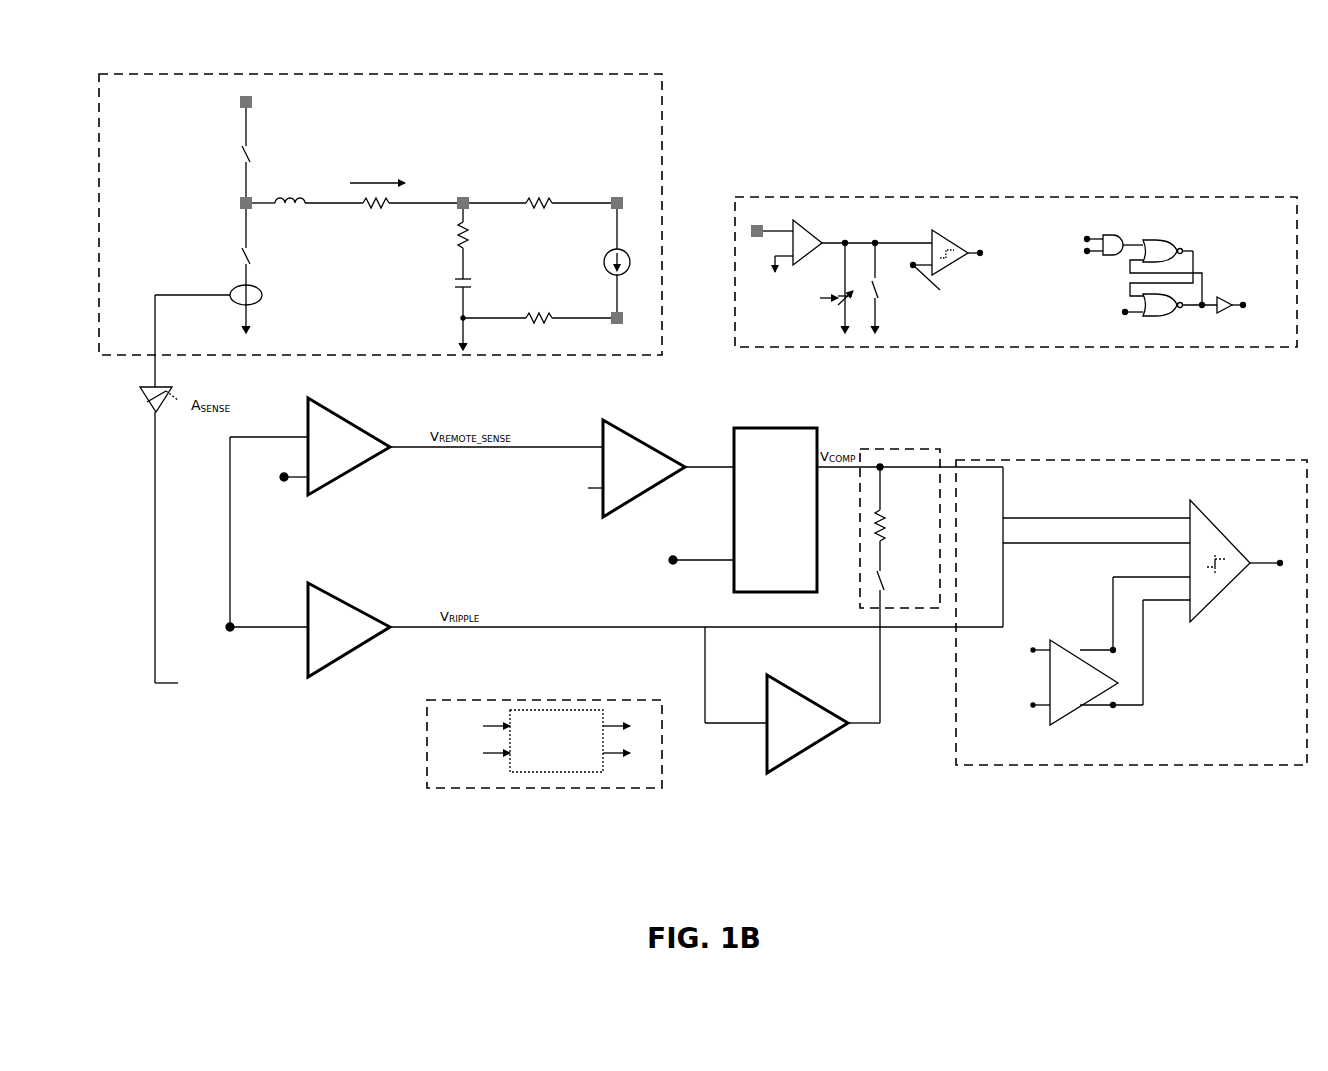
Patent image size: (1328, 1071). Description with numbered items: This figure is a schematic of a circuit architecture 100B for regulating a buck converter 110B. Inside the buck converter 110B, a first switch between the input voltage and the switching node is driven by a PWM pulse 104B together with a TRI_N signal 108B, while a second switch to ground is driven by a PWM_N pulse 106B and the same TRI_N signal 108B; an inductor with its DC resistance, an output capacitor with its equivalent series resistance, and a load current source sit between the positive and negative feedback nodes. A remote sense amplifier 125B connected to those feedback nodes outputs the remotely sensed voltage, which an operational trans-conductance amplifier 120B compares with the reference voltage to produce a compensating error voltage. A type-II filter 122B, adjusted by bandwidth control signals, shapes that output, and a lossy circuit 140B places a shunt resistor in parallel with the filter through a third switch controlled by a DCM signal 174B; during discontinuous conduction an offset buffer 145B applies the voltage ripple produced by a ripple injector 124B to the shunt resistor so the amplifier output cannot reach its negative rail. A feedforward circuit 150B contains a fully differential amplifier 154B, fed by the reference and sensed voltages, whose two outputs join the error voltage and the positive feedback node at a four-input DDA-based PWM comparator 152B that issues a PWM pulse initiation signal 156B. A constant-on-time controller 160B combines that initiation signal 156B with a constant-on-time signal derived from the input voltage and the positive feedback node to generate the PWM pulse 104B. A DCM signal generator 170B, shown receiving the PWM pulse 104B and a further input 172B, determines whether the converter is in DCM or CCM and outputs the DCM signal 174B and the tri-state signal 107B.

The circuit architecture 100B is at (1224, 91).
The PWM pulse 104B is at (238, 148).
The PWM_N pulse 106B is at (238, 253).
The tri-state signal 107B is at (640, 762).
The TRI_N signal 108B is at (172, 206).
The buck converter 110B is at (662, 140).
The operational trans-conductance amplifier 120B is at (630, 432).
The type-II filter 122B is at (778, 425).
The ripple injector 124B is at (329, 596).
The remote sense amplifier 125B is at (355, 425).
The lossy circuit 140B is at (923, 447).
The offset buffer 145B is at (795, 692).
The feedforward circuit 150B is at (1205, 460).
The DDA-based PWM comparator 152B is at (1205, 535).
The fully differential amplifier 154B is at (1055, 642).
The PWM pulse initiation signal 156B is at (1276, 552).
The constant-on-time controller 160B is at (1027, 197).
The DCM signal generator 170B is at (520, 698).
The control input signal 172B is at (472, 762).
The DCM signal 174B is at (888, 578).